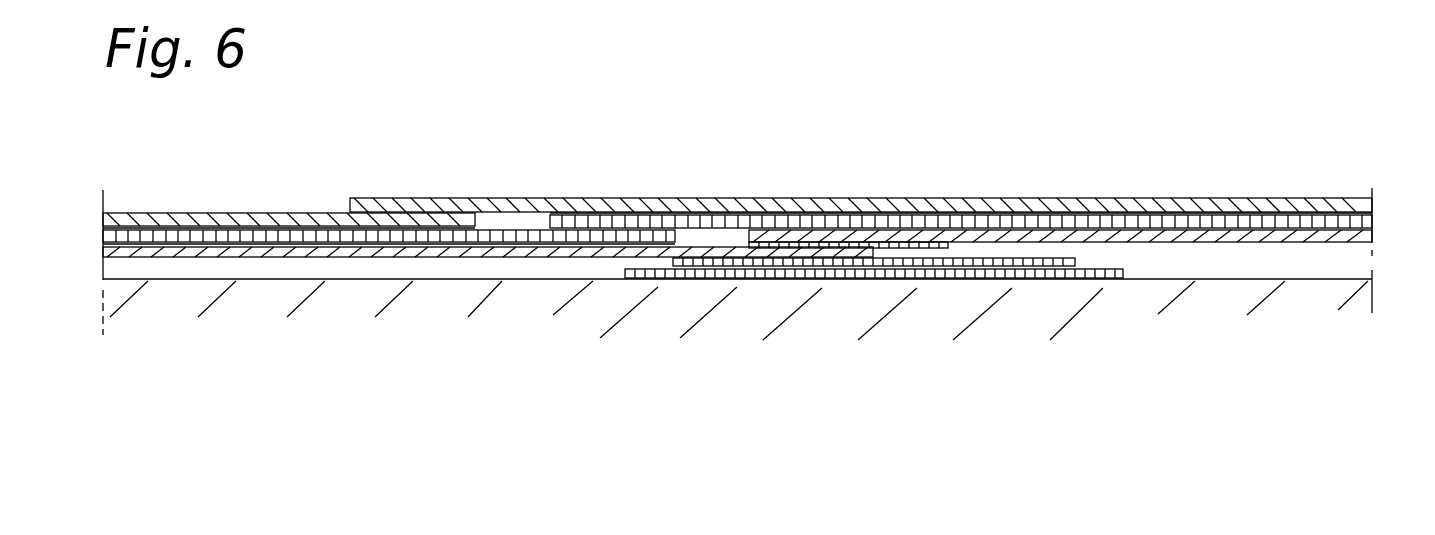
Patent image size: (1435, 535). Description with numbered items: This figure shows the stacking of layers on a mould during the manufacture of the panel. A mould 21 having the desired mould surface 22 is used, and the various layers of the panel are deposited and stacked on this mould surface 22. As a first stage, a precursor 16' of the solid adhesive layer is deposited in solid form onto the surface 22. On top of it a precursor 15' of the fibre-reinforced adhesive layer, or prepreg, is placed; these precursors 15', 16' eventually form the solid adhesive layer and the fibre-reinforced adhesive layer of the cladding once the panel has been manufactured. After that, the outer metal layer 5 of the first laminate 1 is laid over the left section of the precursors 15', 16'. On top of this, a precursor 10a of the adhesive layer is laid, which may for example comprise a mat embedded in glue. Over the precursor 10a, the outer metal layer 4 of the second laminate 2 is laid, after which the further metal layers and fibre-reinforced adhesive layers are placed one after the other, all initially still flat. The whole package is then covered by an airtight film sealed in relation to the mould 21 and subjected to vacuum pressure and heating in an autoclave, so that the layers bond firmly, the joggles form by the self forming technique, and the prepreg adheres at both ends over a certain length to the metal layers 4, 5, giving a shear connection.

The first laminate 1 is at (303, 205).
The second laminate 2 is at (1365, 178).
The outer metal layer of the second laminate 4 is at (1283, 235).
The outer metal layer of the first laminate 5 is at (460, 255).
The precursor of the adhesive layer 10a is at (890, 243).
The precursor of the fibre-reinforced adhesive layer 15' is at (874, 320).
The precursor of the adhesive layer 16' is at (842, 325).
The mould 21 is at (1332, 299).
The mould surface 22 is at (1338, 276).